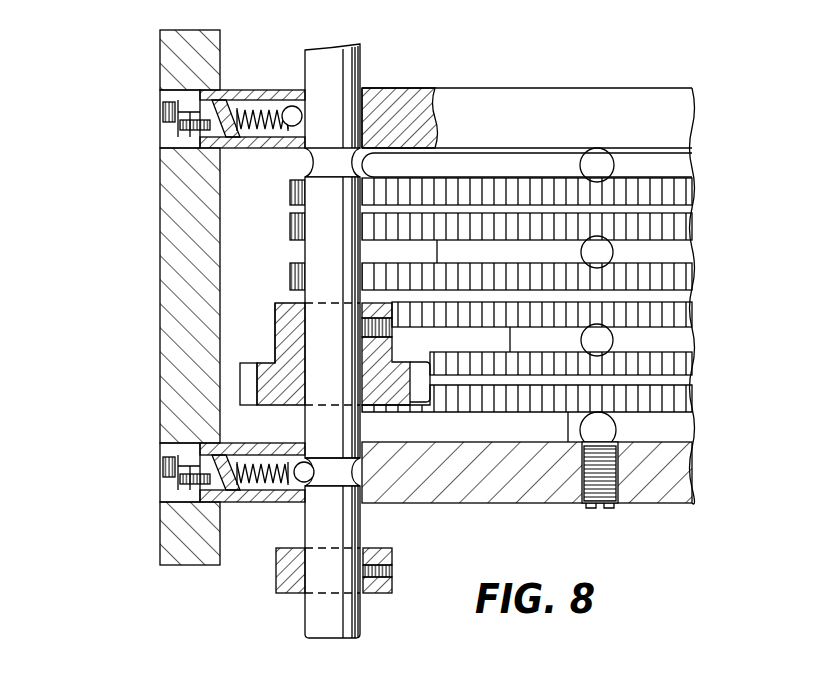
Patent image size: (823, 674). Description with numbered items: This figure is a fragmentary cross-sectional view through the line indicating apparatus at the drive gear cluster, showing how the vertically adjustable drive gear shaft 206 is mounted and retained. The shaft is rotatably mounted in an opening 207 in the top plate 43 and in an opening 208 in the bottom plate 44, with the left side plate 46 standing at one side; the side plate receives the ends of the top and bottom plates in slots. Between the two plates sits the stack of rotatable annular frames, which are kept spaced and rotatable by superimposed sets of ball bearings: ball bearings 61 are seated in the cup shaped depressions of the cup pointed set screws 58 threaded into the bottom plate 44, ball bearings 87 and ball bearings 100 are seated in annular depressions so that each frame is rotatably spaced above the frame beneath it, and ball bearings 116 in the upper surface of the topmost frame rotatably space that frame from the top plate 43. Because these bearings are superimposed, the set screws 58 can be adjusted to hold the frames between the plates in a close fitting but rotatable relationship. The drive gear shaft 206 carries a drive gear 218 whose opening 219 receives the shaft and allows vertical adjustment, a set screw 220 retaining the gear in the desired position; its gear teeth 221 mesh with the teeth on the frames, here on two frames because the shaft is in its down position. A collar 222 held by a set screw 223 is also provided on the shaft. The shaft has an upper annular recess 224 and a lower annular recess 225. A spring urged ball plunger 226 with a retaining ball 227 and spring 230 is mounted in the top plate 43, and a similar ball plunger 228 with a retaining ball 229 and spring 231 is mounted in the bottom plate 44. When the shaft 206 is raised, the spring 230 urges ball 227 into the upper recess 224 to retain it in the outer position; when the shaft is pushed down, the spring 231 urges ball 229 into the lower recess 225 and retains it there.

The top plate 43 is at (598, 135).
The bottom plate 44 is at (510, 504).
The left side plate 46 is at (162, 273).
The cup pointed set screw 58 is at (612, 505).
The precision ball-bearing 61 is at (581, 431).
The ball bearing 87 is at (582, 342).
The ball bearing 100 is at (582, 253).
The ball bearing 116 is at (581, 166).
The drive gear shaft 206 is at (365, 65).
The opening 207 is at (432, 115).
The opening 208 is at (362, 508).
The drive gear 218 is at (273, 326).
The opening 219 is at (300, 349).
The set screw 220 is at (394, 329).
The gear teeth 221 is at (249, 392).
The collar 222 is at (278, 584).
The set screw 223 is at (393, 573).
The upper annular recess 224 is at (318, 158).
The lower annular recess 225 is at (332, 476).
The spring urged ball plunger 226 is at (233, 93).
The retaining ball 227 is at (291, 105).
The ball plunger 228 is at (198, 452).
The retaining ball 229 is at (309, 462).
The spring 230 is at (234, 149).
The spring 231 is at (262, 502).